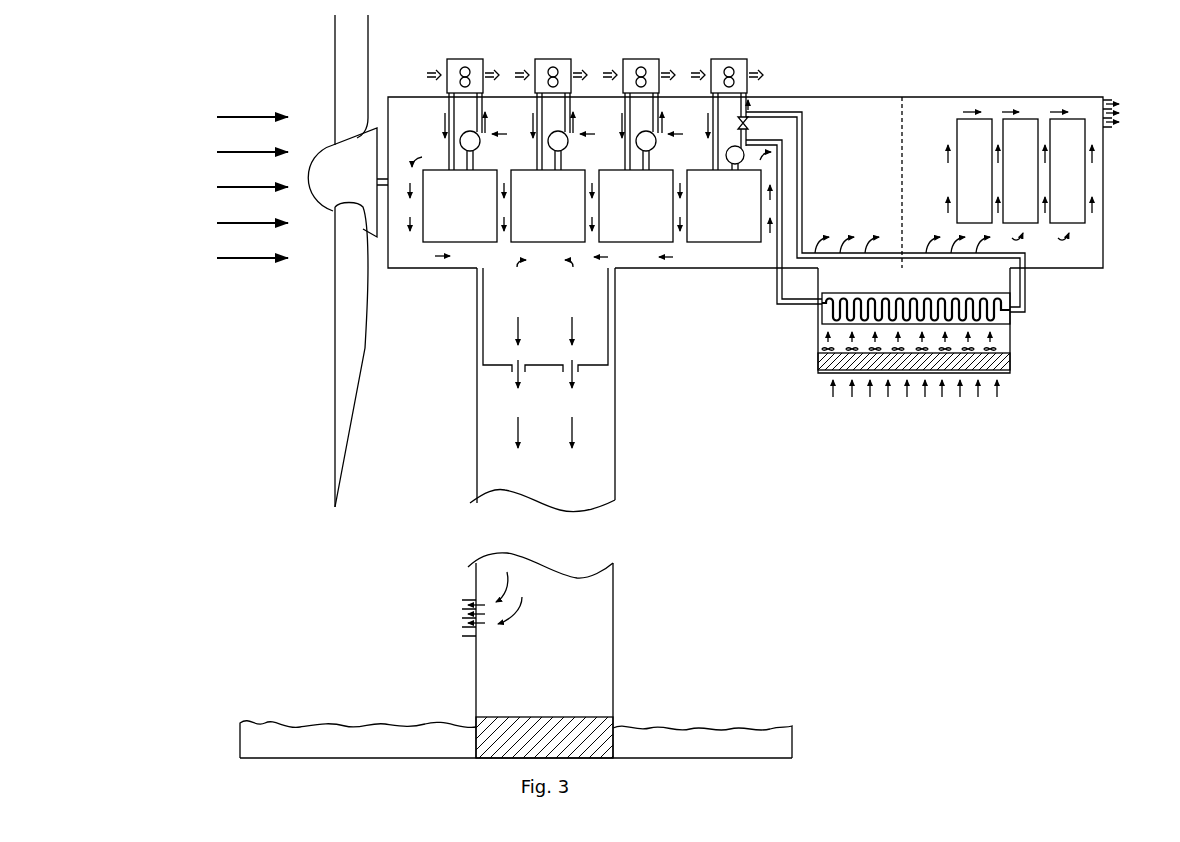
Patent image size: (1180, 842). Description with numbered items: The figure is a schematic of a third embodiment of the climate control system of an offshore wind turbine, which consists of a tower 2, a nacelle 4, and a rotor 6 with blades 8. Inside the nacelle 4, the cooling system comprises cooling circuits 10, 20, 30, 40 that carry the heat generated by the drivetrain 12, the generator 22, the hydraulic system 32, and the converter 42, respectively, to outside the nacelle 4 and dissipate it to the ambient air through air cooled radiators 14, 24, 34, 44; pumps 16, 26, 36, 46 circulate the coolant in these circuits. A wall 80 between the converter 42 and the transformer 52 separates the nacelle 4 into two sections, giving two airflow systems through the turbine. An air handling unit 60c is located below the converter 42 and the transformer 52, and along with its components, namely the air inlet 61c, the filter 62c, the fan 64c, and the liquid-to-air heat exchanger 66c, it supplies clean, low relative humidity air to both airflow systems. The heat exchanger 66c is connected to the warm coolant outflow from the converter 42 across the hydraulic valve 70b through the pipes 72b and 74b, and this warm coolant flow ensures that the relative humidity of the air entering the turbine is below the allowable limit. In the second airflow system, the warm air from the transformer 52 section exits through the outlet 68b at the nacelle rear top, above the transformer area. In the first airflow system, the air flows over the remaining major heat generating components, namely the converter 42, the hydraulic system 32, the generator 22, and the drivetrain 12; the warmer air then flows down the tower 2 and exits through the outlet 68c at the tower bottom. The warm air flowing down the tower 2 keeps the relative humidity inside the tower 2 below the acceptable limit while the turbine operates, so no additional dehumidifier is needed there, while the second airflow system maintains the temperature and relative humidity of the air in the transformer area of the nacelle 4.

The tower 2 is at (613, 637).
The nacelle 4 is at (838, 97).
The rotor 6 is at (330, 172).
The blades 8 is at (345, 353).
The cooling circuit 10 is at (458, 49).
The drivetrain 12 is at (455, 243).
The air cooled radiator 14 is at (446, 67).
The pump 16 is at (482, 140).
The cooling circuit 20 is at (546, 49).
The generator 22 is at (540, 243).
The air cooled radiator 24 is at (534, 67).
The pump 26 is at (570, 140).
The cooling circuit 30 is at (633, 49).
The hydraulic system 32 is at (627, 243).
The air cooled radiator 34 is at (623, 67).
The pump 36 is at (658, 140).
The cooling circuit 40 is at (721, 49).
The converter 42 is at (712, 243).
The air cooled radiator 44 is at (709, 67).
The pump 46 is at (726, 151).
The transformer 52 is at (979, 118).
The air handling unit 60c is at (917, 344).
The air inlet 61c is at (915, 402).
The filter 62c is at (1010, 362).
The fan 64c is at (1010, 349).
The liquid-to-air heat exchanger 66c is at (978, 298).
The outlet 68b is at (1130, 113).
The outlet 68c is at (454, 618).
The hydraulic valve 70b is at (749, 123).
The pipe 72b is at (777, 280).
The pipe 74b is at (805, 160).
The wall 80 is at (902, 160).